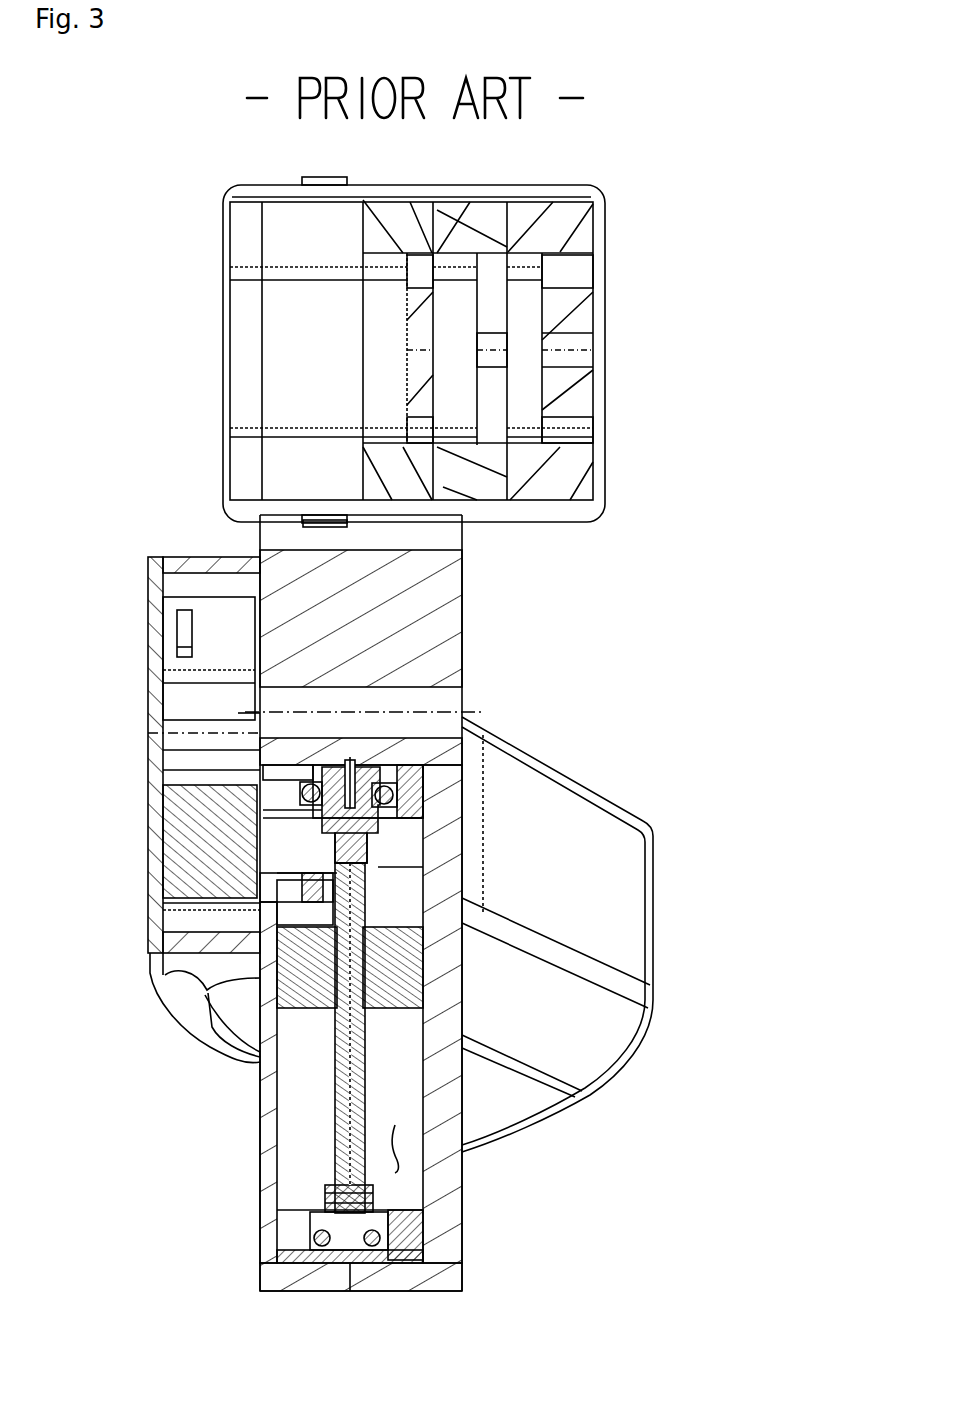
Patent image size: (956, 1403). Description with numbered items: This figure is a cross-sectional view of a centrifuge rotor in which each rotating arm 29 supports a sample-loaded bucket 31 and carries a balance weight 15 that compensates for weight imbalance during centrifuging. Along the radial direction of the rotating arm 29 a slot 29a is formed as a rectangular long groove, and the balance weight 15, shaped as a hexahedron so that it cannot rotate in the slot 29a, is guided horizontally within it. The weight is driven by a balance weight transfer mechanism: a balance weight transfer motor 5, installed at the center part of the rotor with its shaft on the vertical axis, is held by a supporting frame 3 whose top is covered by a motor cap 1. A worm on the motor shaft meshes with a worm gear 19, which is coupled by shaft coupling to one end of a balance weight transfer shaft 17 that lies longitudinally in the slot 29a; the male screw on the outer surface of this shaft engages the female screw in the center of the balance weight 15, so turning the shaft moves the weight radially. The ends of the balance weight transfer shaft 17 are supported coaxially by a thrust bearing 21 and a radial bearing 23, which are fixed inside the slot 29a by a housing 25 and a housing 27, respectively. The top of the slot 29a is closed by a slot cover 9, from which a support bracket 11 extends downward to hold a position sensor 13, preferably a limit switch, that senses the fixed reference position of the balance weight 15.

The motor cap 1 is at (155, 637).
The supporting frame 3 is at (213, 560).
The balance weight transfer motor 5 is at (213, 840).
The slot cover 9 is at (268, 1138).
The support bracket 11 is at (300, 880).
The position sensor 13 is at (300, 902).
The balance weight 15 is at (293, 973).
The balance weight transfer shaft 17 is at (340, 1057).
The worm gear 19 is at (347, 850).
The thrust bearing 21 is at (310, 1240).
The radial bearing 23 is at (378, 795).
The housing 25 is at (462, 1247).
The housing 27 is at (395, 796).
The rotating arm 29 is at (343, 575).
The slot 29a is at (462, 1182).
The sample-loaded bucket 31 is at (427, 327).